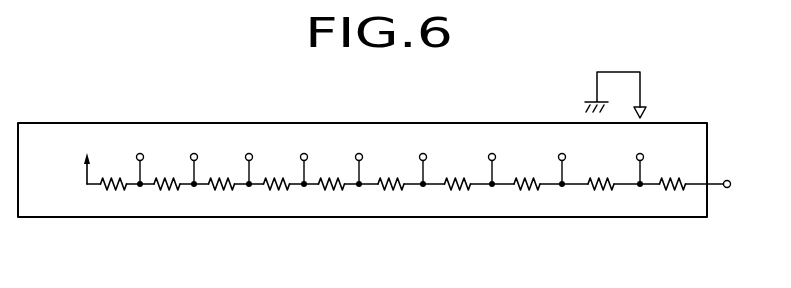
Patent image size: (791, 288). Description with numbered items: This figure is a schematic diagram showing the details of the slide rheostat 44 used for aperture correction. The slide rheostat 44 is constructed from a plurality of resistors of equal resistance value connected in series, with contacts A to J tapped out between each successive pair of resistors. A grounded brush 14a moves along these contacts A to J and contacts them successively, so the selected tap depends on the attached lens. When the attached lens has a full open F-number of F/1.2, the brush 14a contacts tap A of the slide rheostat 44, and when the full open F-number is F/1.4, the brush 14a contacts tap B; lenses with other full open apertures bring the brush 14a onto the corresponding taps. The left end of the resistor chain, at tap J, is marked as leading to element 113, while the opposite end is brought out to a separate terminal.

The slide rheostat for aperture correction 44 is at (442, 123).
The grounded brush 14a is at (642, 80).
The connection to element 113 is at (63, 168).